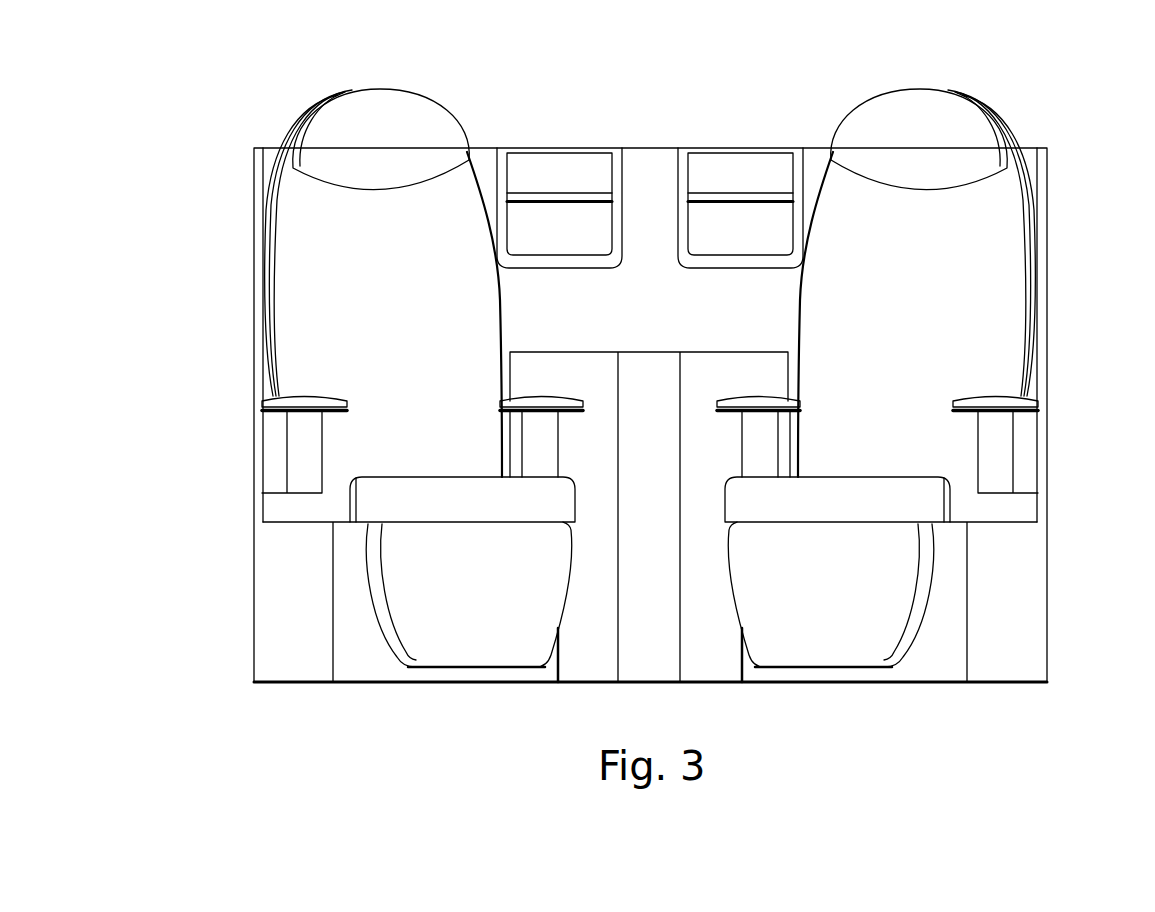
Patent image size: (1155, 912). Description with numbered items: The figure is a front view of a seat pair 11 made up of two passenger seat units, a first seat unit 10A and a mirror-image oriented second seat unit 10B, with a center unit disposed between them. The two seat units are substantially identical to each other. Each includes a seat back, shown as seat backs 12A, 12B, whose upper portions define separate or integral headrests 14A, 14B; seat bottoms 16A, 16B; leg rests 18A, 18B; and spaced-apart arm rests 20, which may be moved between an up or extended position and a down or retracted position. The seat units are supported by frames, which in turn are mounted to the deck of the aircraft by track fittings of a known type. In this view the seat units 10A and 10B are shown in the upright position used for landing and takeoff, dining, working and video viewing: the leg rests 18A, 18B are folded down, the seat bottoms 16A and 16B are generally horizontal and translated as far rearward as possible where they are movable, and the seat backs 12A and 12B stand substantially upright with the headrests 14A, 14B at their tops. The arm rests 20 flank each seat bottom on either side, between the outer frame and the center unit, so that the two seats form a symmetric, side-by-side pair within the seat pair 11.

The seat unit 10A is at (935, 384).
The seat unit 10B is at (357, 399).
The seat pair 11 is at (670, 78).
The seat back 12A is at (992, 253).
The seat back 12B is at (300, 269).
The headrest 14A is at (932, 108).
The headrest 14B is at (413, 115).
The seat bottom 16A is at (918, 498).
The seat bottom 16B is at (365, 500).
The leg rest 18A is at (870, 620).
The leg rest 18B is at (467, 633).
The arm rest 20 is at (300, 433).